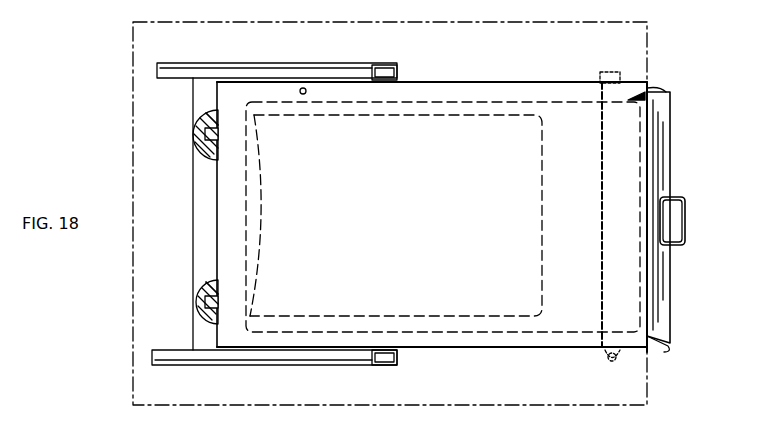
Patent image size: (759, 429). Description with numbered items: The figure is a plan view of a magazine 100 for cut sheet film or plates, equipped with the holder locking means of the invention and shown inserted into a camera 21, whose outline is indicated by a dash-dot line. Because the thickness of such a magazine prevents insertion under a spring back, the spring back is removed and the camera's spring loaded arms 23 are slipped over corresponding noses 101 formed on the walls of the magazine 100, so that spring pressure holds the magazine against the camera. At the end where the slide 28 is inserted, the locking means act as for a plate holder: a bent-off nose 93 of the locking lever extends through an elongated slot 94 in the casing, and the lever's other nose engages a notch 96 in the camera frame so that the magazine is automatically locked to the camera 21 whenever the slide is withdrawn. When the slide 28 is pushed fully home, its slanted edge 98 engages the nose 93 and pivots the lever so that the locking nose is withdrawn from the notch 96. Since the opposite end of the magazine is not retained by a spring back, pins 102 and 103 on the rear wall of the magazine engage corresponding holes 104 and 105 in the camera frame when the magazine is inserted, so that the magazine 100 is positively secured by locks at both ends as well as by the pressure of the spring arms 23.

The camera 21 is at (148, 33).
The spring loaded arm 23 is at (313, 73).
The slide 28 is at (576, 168).
The bent-off nose 93 is at (612, 357).
The elongated slot 94 is at (640, 84).
The notch 96 is at (598, 78).
The slanted edge 98 is at (666, 92).
The magazine 100 is at (490, 77).
The nose 101 is at (382, 65).
The pin 102 is at (197, 143).
The pin 103 is at (197, 306).
The hole 104 is at (200, 125).
The hole 105 is at (200, 295).